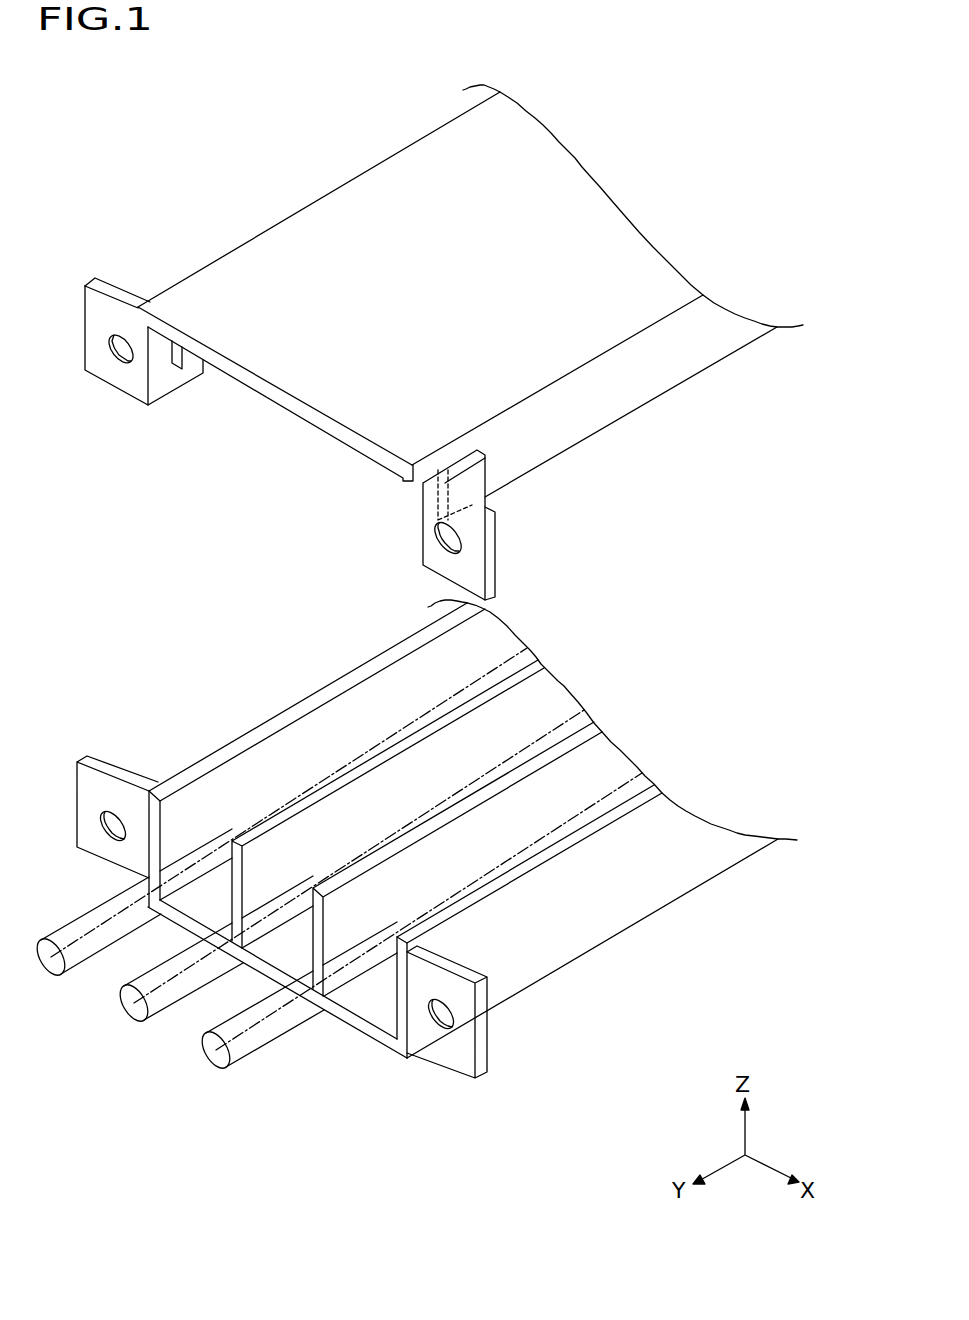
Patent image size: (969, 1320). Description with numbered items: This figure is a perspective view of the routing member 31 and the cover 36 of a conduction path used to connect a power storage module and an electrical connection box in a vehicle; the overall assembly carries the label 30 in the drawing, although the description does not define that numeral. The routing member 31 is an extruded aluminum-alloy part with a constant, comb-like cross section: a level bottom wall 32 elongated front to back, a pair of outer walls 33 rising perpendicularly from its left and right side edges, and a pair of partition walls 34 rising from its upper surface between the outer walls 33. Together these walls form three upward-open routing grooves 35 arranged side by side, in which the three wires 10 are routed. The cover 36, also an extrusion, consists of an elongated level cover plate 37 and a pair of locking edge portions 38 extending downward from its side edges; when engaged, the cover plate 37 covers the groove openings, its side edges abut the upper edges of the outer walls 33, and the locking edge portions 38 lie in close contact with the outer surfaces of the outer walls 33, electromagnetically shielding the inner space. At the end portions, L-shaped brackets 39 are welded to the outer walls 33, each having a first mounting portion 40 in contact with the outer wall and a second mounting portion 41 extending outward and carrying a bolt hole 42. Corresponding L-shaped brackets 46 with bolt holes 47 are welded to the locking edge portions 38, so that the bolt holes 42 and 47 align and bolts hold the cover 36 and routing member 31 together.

The wires 10 is at (163, 1008).
The heat pipe fixing structure 30 is at (713, 165).
The routing member 31 is at (595, 947).
The bottom wall 32 is at (372, 1000).
The outer walls 33 is at (293, 712).
The partition walls 34 is at (403, 745).
The routing grooves 35 is at (477, 642).
The cover 36 is at (287, 142).
The cover plate 37 is at (405, 236).
The locking edge portions 38 is at (194, 356).
The brackets 39 is at (143, 790).
The first mounting portions 40 is at (440, 950).
The second mounting portions 41 is at (86, 790).
The bolt holes 42 is at (108, 838).
The brackets 46 is at (493, 528).
The bolt holes 47 is at (446, 548).